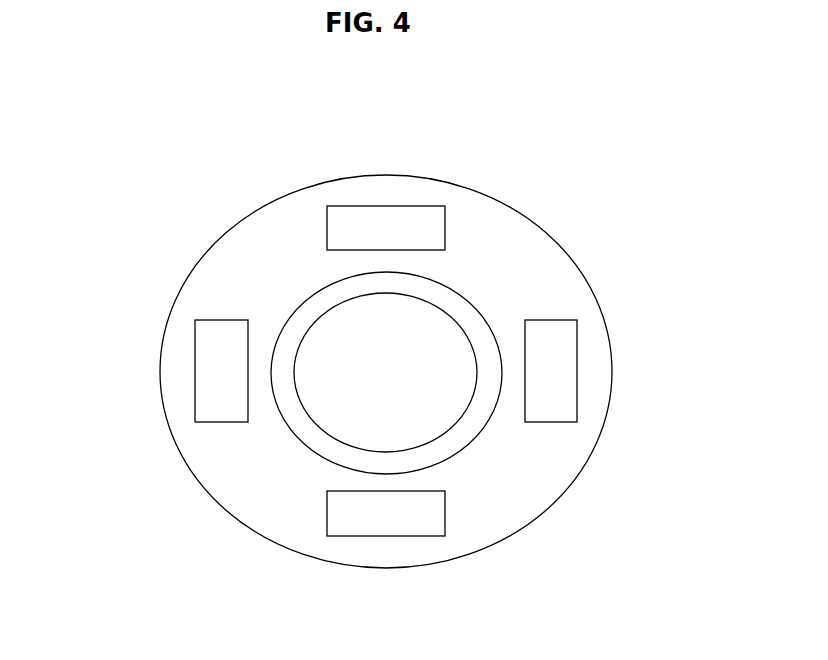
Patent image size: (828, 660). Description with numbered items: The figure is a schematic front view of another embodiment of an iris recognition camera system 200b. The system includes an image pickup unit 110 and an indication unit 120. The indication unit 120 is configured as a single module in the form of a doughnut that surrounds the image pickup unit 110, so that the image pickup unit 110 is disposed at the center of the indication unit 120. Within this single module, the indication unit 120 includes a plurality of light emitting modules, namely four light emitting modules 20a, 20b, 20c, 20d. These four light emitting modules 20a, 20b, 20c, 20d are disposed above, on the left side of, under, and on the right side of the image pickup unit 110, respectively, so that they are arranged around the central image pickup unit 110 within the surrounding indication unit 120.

The iris recognition camera system 200b is at (167, 121).
The indication unit 120 is at (530, 270).
The image pickup unit 110 is at (427, 393).
The light emitting module 20a is at (385, 227).
The light emitting module 20b is at (213, 372).
The light emitting module 20c is at (383, 520).
The light emitting module 20d is at (550, 378).